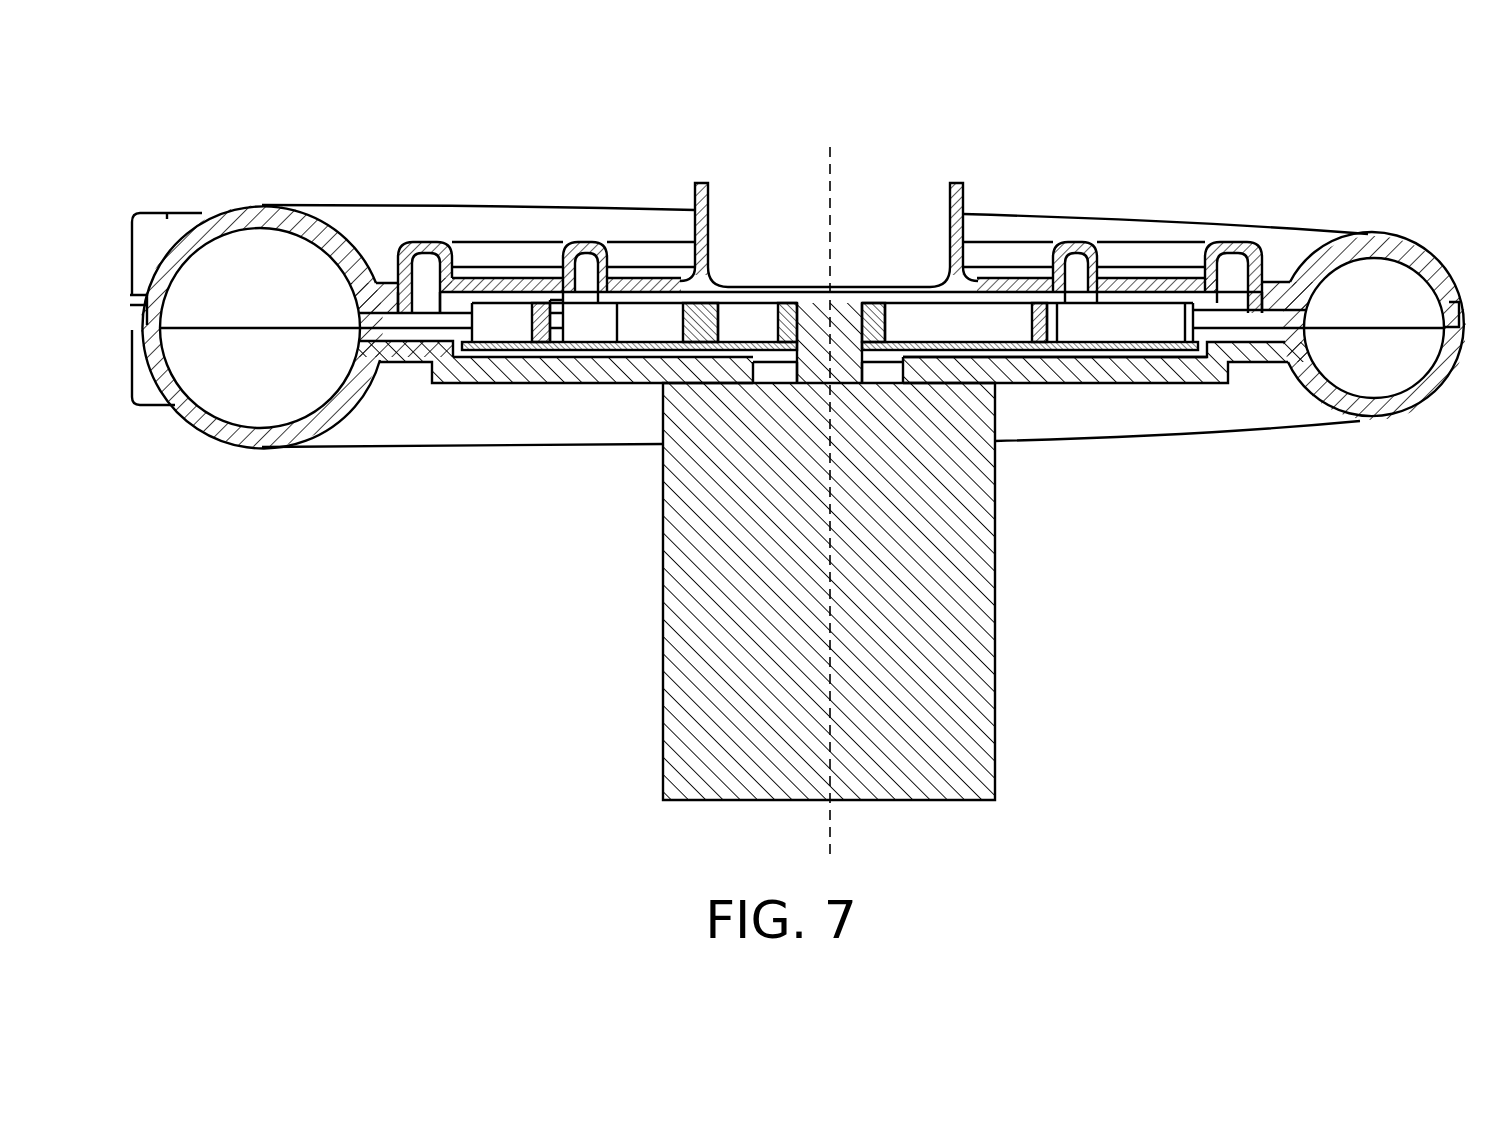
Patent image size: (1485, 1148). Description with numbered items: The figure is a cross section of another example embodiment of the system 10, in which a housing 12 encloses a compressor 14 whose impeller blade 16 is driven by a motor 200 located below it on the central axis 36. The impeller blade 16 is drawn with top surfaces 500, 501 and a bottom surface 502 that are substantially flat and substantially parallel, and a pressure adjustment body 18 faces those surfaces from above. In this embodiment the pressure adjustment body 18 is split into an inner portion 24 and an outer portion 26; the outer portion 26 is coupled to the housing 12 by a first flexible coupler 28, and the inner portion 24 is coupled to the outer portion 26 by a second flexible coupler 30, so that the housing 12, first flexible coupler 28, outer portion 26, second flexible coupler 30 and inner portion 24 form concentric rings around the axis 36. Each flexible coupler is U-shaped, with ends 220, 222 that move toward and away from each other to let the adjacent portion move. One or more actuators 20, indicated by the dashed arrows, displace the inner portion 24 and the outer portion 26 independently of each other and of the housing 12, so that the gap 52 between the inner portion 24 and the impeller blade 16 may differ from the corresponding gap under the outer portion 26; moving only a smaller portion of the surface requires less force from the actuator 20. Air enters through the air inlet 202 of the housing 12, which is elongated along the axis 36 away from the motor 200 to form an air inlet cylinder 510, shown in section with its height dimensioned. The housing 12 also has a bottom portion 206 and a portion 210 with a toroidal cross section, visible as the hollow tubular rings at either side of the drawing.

The system 10 is at (183, 145).
The housing 12 is at (302, 205).
The compressor 14 is at (1303, 178).
The impeller blade 16 is at (643, 347).
The pressure adjustment body 18 is at (440, 165).
The actuator 20 is at (505, 275).
The inner portion 24 is at (702, 185).
The outer portion 26 is at (537, 280).
The first flexible coupler 28 is at (417, 242).
The second flexible coupler 30 is at (585, 242).
The axis 36 is at (826, 810).
The gap 52 is at (676, 372).
The motor 200 is at (662, 714).
The air inlet 202 is at (925, 130).
The bottom portion 206 is at (498, 373).
The portion of housing 210 is at (227, 357).
The end 220 is at (405, 308).
The end 222 is at (445, 290).
The top surface 500 is at (786, 303).
The top surface 501 is at (617, 303).
The bottom surface 502 is at (615, 358).
The air inlet cylinder 510 is at (925, 183).